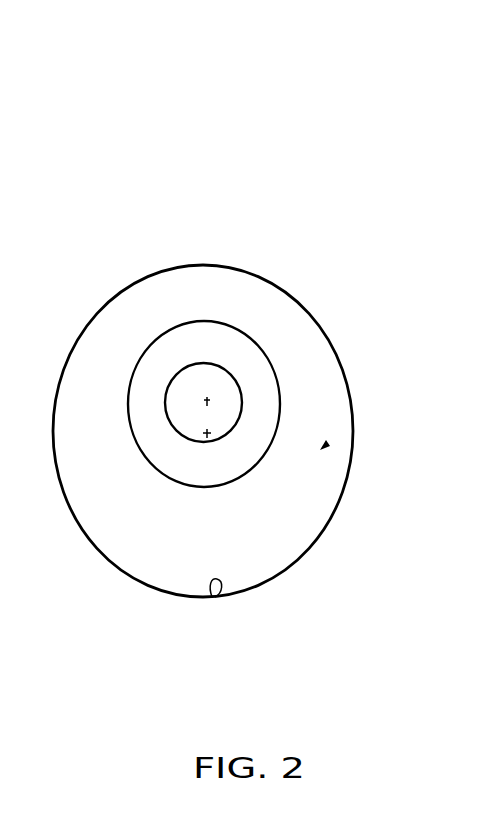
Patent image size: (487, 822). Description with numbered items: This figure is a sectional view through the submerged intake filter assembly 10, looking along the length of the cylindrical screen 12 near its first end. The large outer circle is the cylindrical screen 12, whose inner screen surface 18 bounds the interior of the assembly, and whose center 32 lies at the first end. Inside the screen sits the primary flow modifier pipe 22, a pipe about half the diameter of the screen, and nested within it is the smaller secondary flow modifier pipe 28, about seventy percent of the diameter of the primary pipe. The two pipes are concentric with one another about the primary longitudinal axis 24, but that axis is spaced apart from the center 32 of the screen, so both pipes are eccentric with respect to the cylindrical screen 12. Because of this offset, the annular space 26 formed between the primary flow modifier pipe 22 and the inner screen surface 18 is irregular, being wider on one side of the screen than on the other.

The submerged intake filter assembly 10 is at (232, 128).
The cylindrical screen 12 is at (306, 297).
The inner screen surface 18 is at (212, 597).
The primary flow modifier pipe 22 is at (135, 453).
The primary longitudinal axis 24 is at (203, 398).
The annular space 26 is at (330, 444).
The secondary flow modifier pipe 28 is at (192, 443).
The center 32 is at (211, 444).